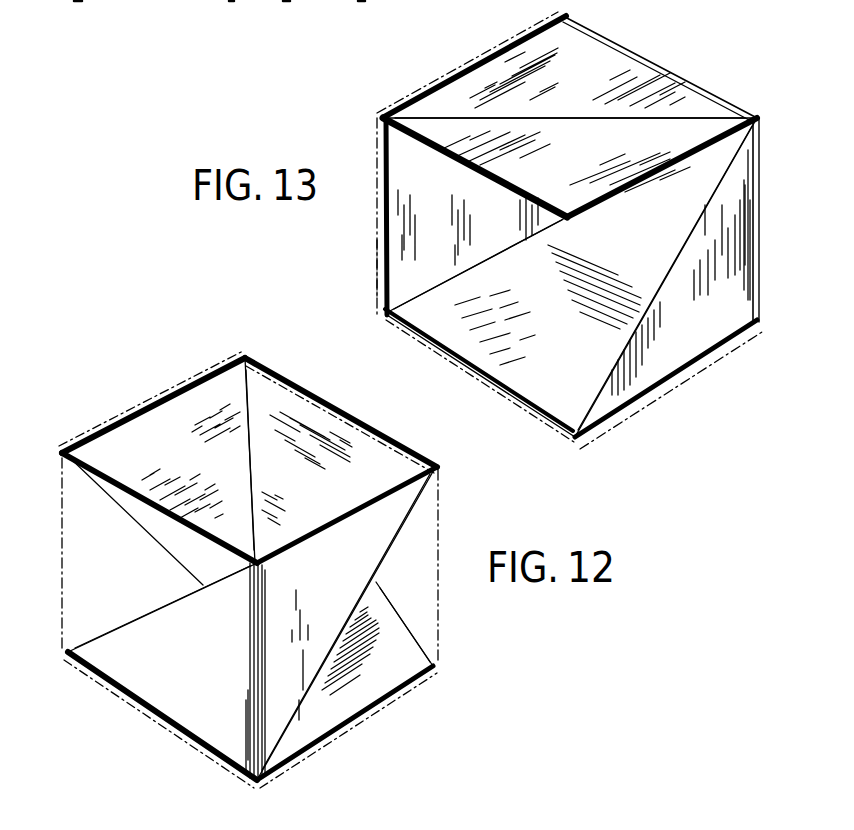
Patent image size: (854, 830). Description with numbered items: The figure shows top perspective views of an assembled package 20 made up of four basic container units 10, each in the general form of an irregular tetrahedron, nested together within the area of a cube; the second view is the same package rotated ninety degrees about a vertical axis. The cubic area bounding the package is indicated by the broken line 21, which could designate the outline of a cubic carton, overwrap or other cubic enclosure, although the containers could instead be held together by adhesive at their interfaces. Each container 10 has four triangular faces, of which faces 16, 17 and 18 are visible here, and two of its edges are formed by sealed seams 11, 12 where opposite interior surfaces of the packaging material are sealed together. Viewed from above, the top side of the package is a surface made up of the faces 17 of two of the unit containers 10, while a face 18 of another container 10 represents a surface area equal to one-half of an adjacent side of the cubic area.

In FIG. 13, the basic container unit 10 is at (626, 74).
In FIG. 12, the basic container unit 10 is at (162, 437).
In FIG. 13, the sealed seam 11 is at (456, 366).
In FIG. 12, the sealed seam 11 is at (137, 500).
In FIG. 12, the sealed seam 12 is at (250, 713).
In FIG. 13, the triangular face 16 is at (556, 329).
In FIG. 12, the triangular face 16 is at (227, 567).
In FIG. 13, the triangular face 17 is at (589, 81).
In FIG. 12, the triangular face 17 is at (207, 468).
In FIG. 13, the triangular face 18 is at (445, 201).
In FIG. 12, the triangular face 18 is at (188, 643).
In FIG. 13, the assembled package 20 is at (371, 262).
In FIG. 12, the assembled package 20 is at (170, 387).
In FIG. 13, the broken line 21 is at (502, 44).
In FIG. 12, the broken line 21 is at (440, 534).